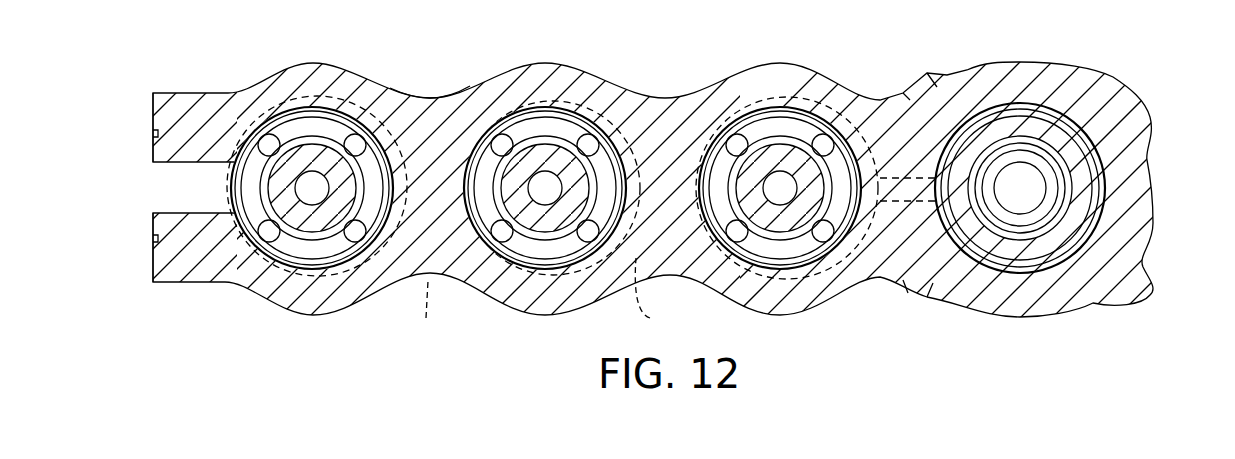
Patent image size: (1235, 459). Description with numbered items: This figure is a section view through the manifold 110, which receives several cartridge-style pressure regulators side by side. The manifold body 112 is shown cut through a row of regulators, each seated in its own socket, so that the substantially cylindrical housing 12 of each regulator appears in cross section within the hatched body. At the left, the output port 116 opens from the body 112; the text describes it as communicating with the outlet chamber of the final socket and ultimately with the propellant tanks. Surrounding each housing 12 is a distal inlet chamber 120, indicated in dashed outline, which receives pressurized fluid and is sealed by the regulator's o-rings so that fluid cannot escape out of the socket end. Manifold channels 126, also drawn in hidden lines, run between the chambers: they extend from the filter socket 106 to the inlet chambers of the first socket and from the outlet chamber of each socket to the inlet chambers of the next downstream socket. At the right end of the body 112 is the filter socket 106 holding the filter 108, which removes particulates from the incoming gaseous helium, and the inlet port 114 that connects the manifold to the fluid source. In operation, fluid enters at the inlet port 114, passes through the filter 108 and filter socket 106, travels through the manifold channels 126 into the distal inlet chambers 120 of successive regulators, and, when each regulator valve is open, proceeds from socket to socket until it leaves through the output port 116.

The manifold 110 is at (229, 47).
The manifold body 112 is at (418, 98).
The output port 116 is at (166, 183).
The distal inlet chamber 120 is at (385, 97).
The manifold channels 126 is at (656, 303).
The housing 12 is at (556, 122).
The filter socket 106 is at (1127, 123).
The filter 108 is at (1090, 225).
The inlet port 114 is at (1020, 196).